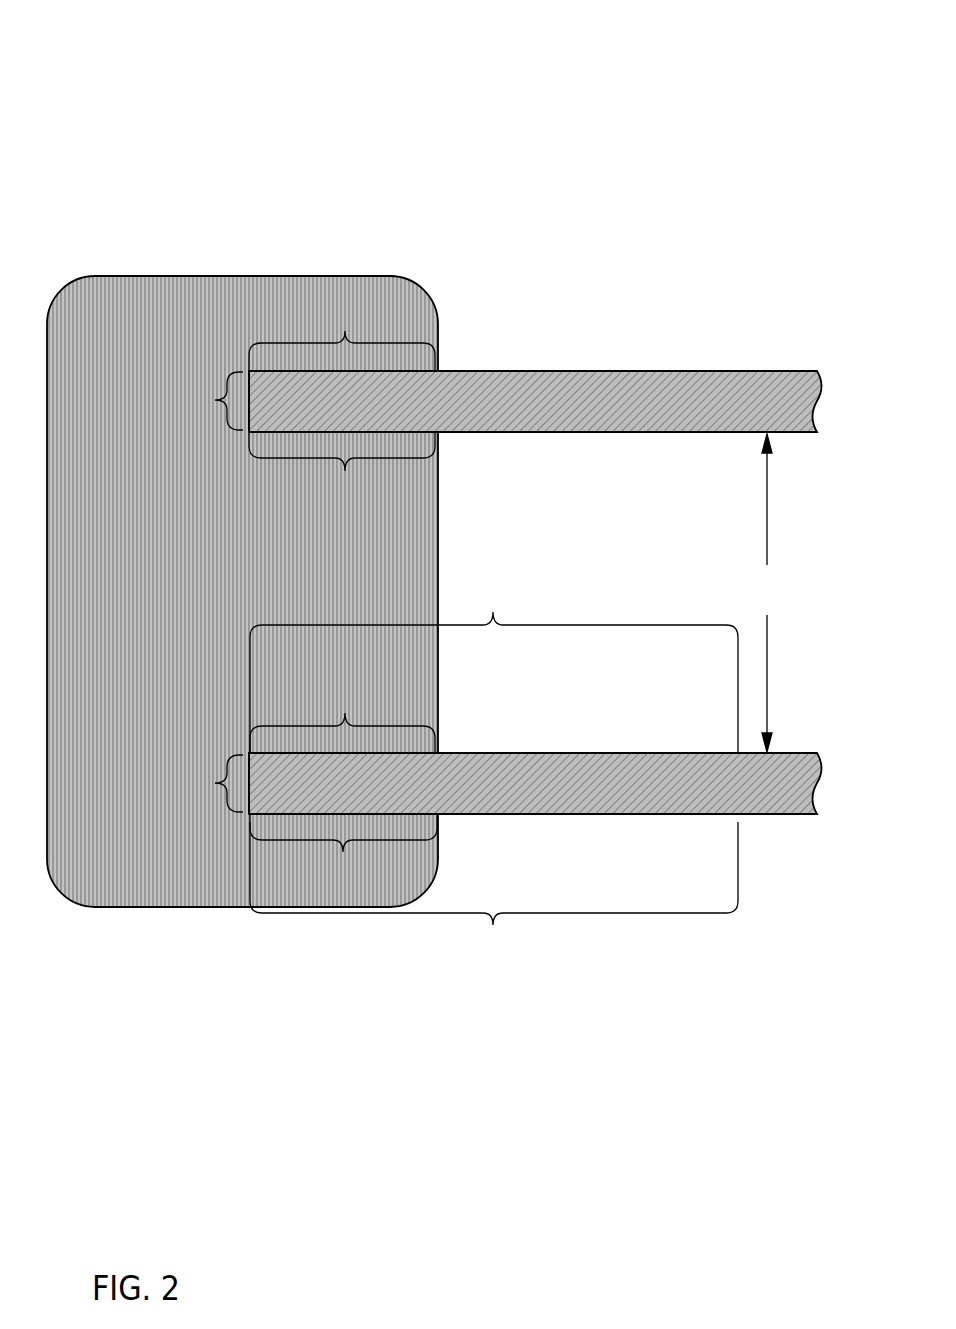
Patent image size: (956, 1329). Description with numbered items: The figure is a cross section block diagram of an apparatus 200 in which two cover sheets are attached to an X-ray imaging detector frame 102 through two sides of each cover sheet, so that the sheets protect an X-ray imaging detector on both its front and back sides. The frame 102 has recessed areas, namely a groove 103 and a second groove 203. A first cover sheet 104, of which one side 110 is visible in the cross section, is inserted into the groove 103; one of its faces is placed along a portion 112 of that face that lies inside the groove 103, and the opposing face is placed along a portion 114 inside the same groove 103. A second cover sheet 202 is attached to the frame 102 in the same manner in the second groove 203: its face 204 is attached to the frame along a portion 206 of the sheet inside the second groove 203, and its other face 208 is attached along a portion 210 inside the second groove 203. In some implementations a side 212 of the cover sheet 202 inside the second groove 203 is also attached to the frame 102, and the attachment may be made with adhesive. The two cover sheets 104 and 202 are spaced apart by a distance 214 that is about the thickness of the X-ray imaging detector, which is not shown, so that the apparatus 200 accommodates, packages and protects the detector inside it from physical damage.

The apparatus 200 is at (848, 50).
The X-ray imaging detector frame 102 is at (262, 616).
The groove 103 is at (418, 412).
The cover sheet 104 is at (668, 412).
The side 110 is at (209, 401).
The portion 112 is at (342, 336).
The portion 114 is at (342, 465).
The cover sheet 202 is at (669, 794).
The second groove 203 is at (343, 783).
The face 204 is at (494, 668).
The portion 206 is at (342, 718).
The face 208 is at (494, 888).
The portion 210 is at (343, 848).
The side 212 is at (207, 783).
The distance 214 is at (767, 593).